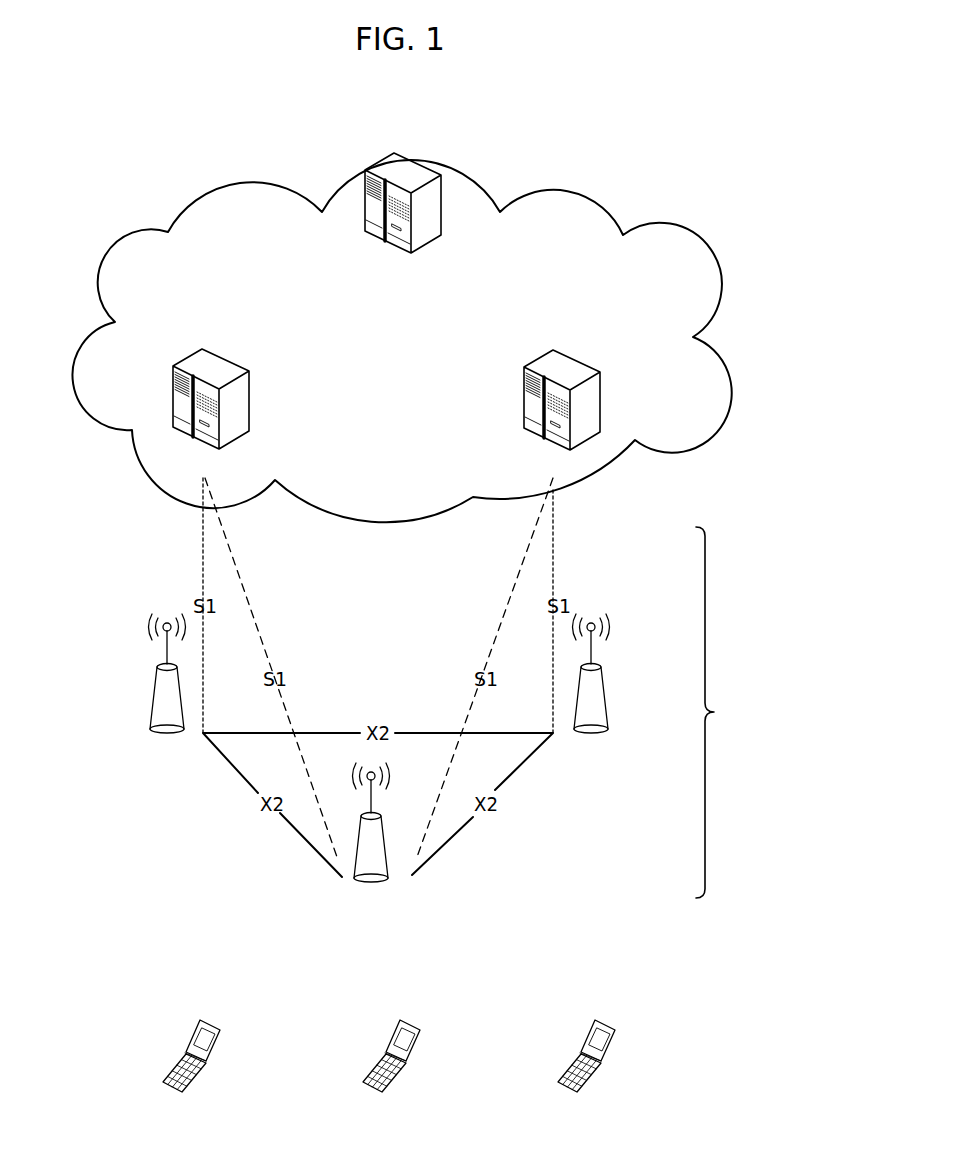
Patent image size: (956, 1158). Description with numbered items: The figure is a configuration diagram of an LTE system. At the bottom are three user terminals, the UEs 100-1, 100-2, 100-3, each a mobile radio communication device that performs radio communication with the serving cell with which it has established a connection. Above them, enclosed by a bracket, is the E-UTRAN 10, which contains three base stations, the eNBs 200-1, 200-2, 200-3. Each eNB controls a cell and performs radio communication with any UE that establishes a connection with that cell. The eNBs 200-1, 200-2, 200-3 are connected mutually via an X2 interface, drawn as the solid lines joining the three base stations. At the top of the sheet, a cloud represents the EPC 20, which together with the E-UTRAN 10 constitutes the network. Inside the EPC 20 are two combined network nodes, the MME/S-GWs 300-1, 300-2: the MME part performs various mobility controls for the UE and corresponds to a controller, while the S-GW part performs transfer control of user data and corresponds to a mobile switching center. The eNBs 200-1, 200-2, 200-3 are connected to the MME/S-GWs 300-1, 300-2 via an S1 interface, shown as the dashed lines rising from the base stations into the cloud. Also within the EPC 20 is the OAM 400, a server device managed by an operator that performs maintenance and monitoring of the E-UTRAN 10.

The E-UTRAN 10 is at (755, 712).
The EPC 20 is at (603, 204).
The UE 100-1 is at (212, 1022).
The UE 100-2 is at (412, 1022).
The UE 100-3 is at (607, 1022).
The eNB 200-1 is at (150, 700).
The eNB 200-2 is at (387, 858).
The eNB 200-3 is at (630, 672).
The MME/S-GW 300-1 is at (233, 360).
The MME/S-GW 300-2 is at (590, 337).
The OAM 400 is at (388, 156).